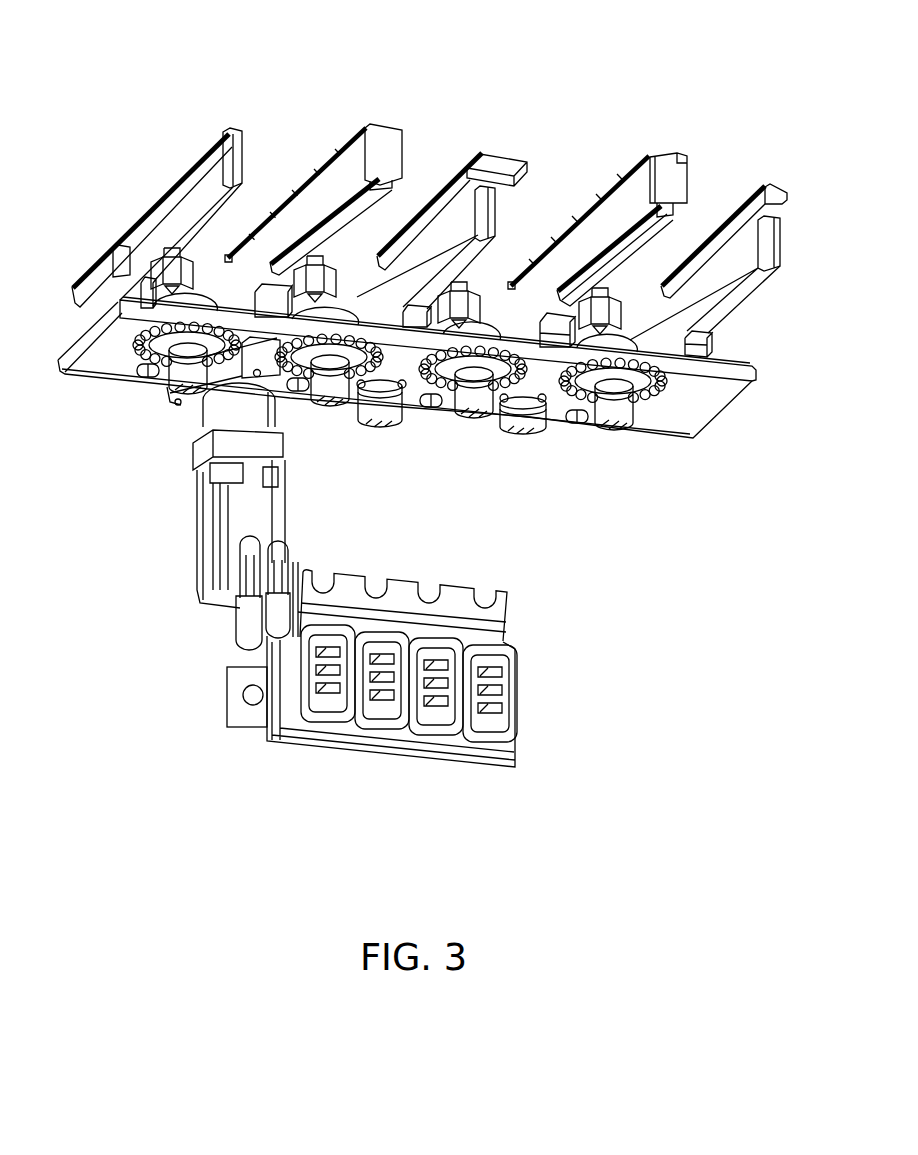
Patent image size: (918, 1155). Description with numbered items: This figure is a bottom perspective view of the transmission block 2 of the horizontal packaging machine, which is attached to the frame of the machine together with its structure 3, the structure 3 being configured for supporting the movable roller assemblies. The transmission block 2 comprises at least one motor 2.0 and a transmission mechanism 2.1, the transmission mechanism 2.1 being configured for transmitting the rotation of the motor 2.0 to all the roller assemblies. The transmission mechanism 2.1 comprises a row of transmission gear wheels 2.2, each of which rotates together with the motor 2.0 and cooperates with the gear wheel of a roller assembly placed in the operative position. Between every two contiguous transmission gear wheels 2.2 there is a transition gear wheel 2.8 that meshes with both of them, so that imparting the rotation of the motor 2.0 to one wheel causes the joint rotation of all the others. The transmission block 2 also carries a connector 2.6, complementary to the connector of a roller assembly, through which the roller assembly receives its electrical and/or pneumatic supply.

The structure 3 is at (116, 205).
The transmission block 2 is at (409, 532).
The motor 2.0 is at (236, 527).
The transmission mechanism 2.1 is at (119, 360).
The transmission gear wheel 2.2 is at (640, 393).
The connector 2.6 is at (520, 697).
The transition gear wheel 2.8 is at (547, 407).